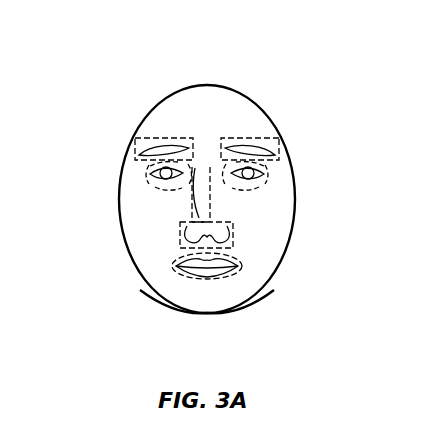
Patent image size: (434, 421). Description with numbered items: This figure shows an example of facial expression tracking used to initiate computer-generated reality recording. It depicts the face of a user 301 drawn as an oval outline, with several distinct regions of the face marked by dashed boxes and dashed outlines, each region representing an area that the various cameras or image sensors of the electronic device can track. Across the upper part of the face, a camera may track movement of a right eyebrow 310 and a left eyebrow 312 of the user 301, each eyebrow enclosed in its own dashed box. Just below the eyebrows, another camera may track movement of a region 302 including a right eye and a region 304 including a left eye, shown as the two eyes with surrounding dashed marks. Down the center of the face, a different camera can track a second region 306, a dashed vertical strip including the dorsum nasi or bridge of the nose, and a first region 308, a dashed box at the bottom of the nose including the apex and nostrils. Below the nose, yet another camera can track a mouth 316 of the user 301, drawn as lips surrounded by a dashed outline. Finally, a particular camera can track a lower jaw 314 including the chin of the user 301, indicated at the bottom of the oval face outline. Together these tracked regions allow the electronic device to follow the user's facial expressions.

The user 301 is at (147, 122).
The region including a right eye 302 is at (143, 182).
The region including a left eye 304 is at (272, 182).
The second region 306 is at (201, 167).
The first region 308 is at (237, 240).
The right eyebrow 310 is at (176, 142).
The left eyebrow 312 is at (250, 139).
The lower jaw 314 is at (168, 303).
The mouth 316 is at (242, 268).